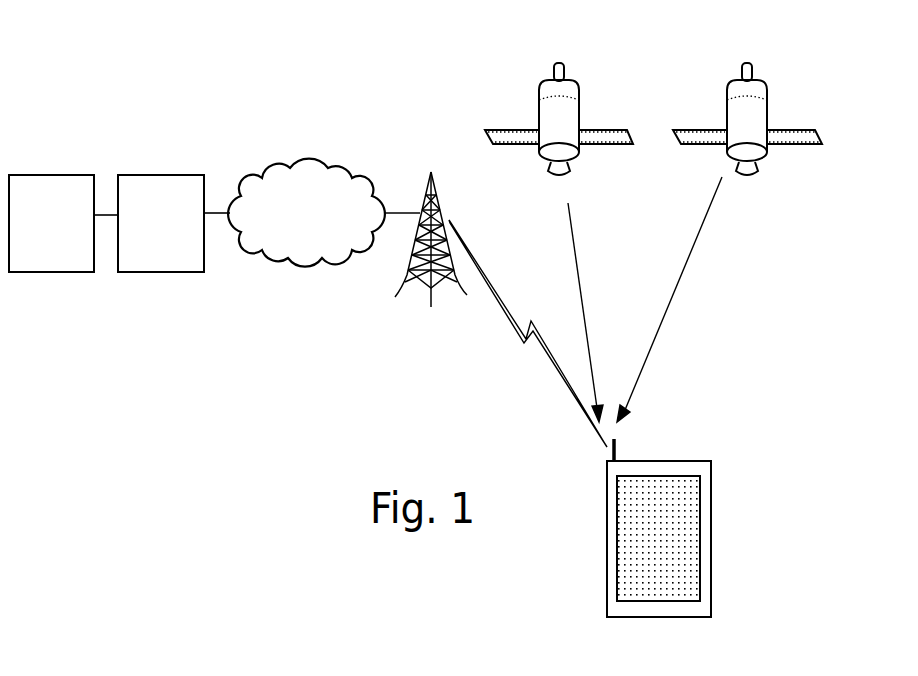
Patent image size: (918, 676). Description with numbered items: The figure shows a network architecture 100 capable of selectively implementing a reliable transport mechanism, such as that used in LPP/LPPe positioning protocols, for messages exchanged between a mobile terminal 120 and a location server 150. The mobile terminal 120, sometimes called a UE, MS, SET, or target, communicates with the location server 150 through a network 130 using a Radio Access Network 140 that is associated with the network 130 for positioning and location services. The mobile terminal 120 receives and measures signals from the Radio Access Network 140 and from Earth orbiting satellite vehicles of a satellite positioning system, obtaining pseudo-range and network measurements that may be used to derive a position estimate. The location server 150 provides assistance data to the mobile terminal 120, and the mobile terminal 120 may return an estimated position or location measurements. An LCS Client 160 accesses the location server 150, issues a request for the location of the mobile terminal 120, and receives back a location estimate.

The network architecture 100 is at (150, 50).
The mobile terminal 120 is at (674, 461).
The network 130 is at (317, 160).
The Radio Access Network 140 is at (429, 170).
The location server 150 is at (146, 175).
The LCS Client 160 is at (31, 175).